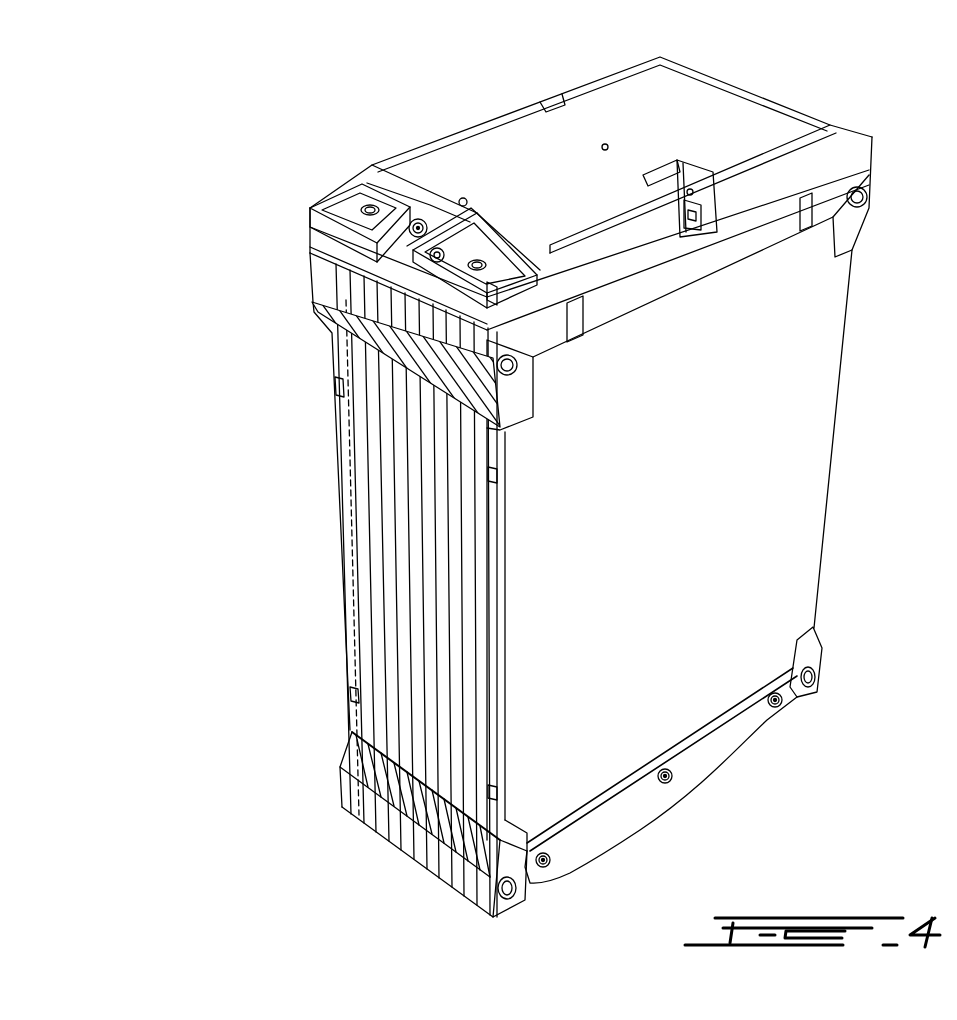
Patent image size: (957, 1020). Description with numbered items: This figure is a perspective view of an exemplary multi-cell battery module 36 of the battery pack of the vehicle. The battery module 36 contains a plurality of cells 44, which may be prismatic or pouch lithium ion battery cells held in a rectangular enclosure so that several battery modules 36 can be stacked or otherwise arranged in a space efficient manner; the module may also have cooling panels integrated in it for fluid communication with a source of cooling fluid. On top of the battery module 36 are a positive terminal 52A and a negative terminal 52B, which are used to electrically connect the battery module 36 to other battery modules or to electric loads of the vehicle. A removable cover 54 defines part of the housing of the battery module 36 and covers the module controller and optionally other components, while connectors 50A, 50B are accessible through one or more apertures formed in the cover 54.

The battery module 36 is at (170, 133).
The battery cells 44 is at (397, 483).
The connector 50A is at (692, 178).
The connector 50B is at (737, 130).
The positive terminal 52A is at (350, 208).
The negative terminal 52B is at (493, 260).
The removable cover 54 is at (499, 150).